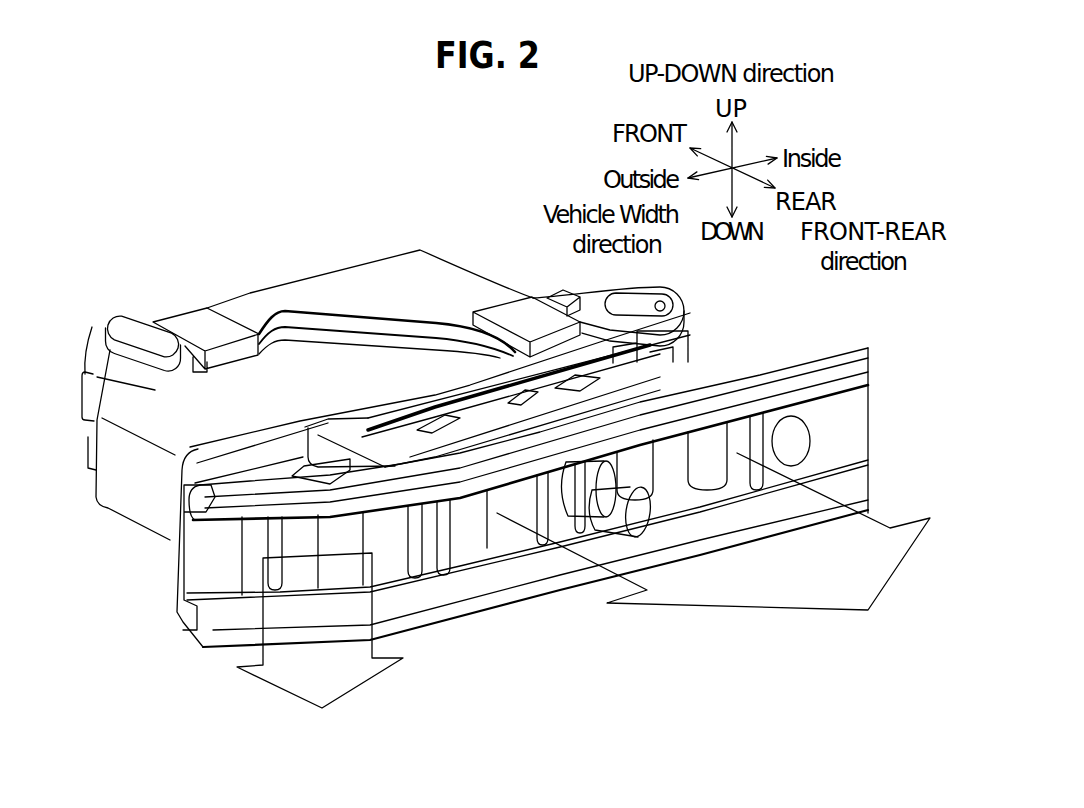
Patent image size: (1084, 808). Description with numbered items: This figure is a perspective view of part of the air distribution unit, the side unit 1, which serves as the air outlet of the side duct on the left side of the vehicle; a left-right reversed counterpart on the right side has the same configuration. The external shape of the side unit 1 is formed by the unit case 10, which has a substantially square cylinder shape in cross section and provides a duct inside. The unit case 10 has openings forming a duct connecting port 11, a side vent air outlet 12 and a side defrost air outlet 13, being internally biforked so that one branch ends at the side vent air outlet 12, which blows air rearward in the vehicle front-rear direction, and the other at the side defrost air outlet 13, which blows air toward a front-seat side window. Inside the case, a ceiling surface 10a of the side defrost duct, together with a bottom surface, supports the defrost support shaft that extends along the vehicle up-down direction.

The side unit 1 is at (213, 263).
The unit case 10 is at (413, 270).
The ceiling surface 10a is at (108, 355).
The duct connecting port 11 is at (318, 276).
The side vent air outlet 12 is at (670, 490).
The side defrost air outlet 13 is at (303, 585).